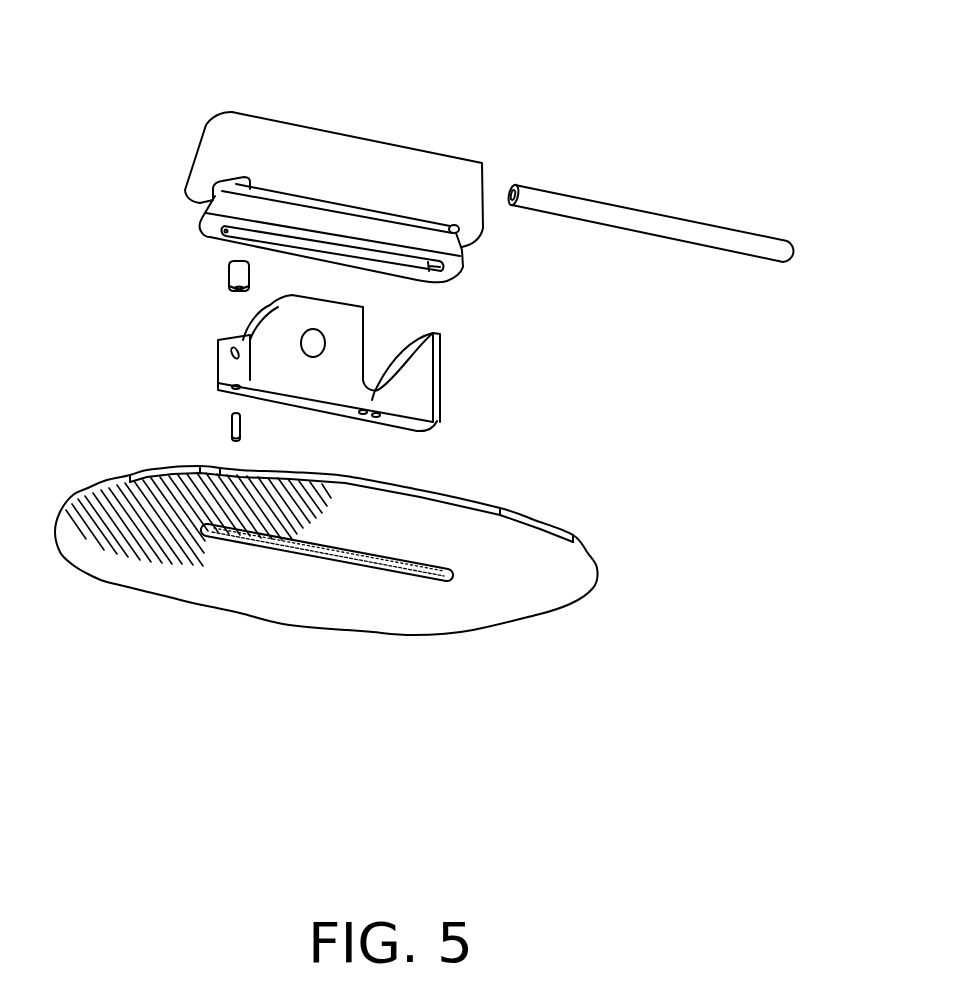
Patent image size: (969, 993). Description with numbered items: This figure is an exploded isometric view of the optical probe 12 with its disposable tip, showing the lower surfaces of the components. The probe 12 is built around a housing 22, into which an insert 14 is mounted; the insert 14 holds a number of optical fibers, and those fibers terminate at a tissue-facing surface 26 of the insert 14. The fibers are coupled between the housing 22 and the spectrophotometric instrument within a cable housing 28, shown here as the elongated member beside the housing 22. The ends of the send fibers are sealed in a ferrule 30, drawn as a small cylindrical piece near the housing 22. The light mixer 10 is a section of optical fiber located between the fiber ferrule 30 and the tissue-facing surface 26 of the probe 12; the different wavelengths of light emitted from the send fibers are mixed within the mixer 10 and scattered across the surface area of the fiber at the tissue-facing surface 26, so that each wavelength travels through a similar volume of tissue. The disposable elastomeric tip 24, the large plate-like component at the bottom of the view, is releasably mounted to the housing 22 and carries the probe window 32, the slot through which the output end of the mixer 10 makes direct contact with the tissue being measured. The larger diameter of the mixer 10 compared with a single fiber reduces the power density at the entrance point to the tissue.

The light mixer 10 is at (227, 428).
The optical probe 12 is at (418, 123).
The insert 14 is at (380, 413).
The housing 22 is at (328, 133).
The disposable elastomeric tip 24 is at (527, 533).
The tissue-facing surface 26 is at (307, 403).
The cable housing 28 is at (597, 204).
The ferrule 30 is at (230, 278).
The probe window 32 is at (330, 562).